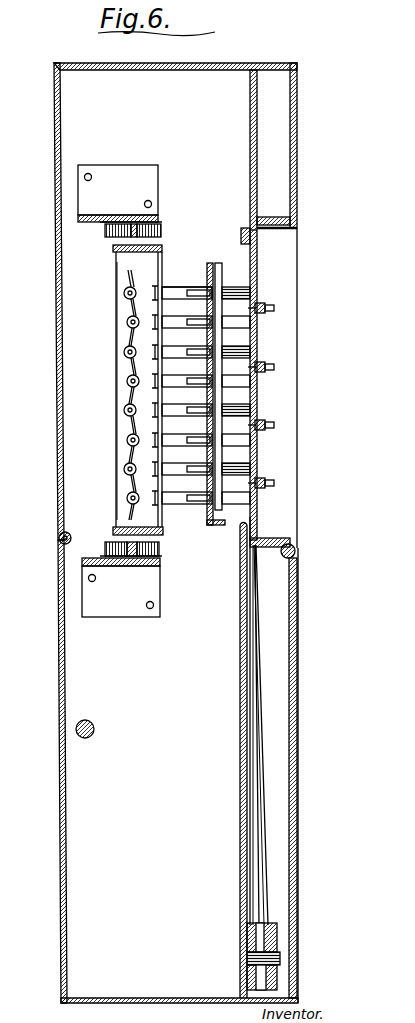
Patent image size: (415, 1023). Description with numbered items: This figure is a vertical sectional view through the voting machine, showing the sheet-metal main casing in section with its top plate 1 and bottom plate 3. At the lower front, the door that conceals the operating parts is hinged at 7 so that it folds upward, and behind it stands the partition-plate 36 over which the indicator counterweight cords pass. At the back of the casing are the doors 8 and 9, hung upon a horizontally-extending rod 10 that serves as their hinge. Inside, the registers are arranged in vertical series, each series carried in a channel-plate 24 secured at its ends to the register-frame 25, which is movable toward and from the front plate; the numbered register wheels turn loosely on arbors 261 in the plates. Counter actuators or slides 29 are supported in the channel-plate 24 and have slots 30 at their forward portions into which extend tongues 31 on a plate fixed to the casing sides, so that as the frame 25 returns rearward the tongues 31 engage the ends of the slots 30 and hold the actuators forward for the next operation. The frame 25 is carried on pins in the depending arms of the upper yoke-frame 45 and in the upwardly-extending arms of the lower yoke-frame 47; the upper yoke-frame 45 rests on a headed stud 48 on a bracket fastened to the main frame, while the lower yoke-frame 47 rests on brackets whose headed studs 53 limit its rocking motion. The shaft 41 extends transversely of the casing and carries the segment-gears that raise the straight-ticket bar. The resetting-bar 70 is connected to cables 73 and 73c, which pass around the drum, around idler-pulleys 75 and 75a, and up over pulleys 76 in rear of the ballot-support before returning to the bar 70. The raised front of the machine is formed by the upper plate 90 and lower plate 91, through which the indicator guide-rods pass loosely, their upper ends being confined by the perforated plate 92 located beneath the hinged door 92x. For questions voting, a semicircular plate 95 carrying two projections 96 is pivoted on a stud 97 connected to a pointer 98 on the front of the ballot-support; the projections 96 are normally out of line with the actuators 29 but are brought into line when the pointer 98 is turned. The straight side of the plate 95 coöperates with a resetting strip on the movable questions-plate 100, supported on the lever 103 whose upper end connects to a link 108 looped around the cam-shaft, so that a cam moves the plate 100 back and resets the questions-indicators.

The top plate 1 is at (193, 64).
The bottom plate 3 is at (138, 998).
The hinge 7 is at (297, 551).
The door 8 is at (57, 487).
The door 9 is at (60, 652).
The horizontally-extending rod 10 is at (59, 539).
The channel-plate 24 is at (116, 478).
The register-frame 25 is at (118, 249).
The counter actuator 29 is at (170, 288).
The slot 30 is at (188, 289).
The tongue 31 is at (215, 290).
The partition-plate 36 is at (240, 620).
The shaft 41 is at (94, 727).
The upper yoke-frame 45 is at (130, 215).
The lower yoke-frame 47 is at (134, 566).
The headed stud 48 is at (160, 229).
The headed stud 53 is at (112, 548).
The resetting-bar 70 is at (256, 563).
The cable 73 is at (261, 897).
The cable 73c is at (267, 846).
The idler-pulley 75 is at (270, 938).
The idler-pulley 75a is at (250, 940).
The pulley 76 is at (245, 531).
The plate 90 is at (282, 537).
The plate 91 is at (292, 231).
The plate 92 is at (288, 218).
The hinged door 92x is at (293, 153).
The semicircular plate 95 is at (258, 322).
The projection 96 is at (250, 293).
The stud 97 is at (263, 431).
The pointer 98 is at (262, 367).
The movable plate 100 is at (258, 395).
The lever 103 is at (250, 232).
The link 108 is at (241, 237).
The arbor 261 is at (127, 380).